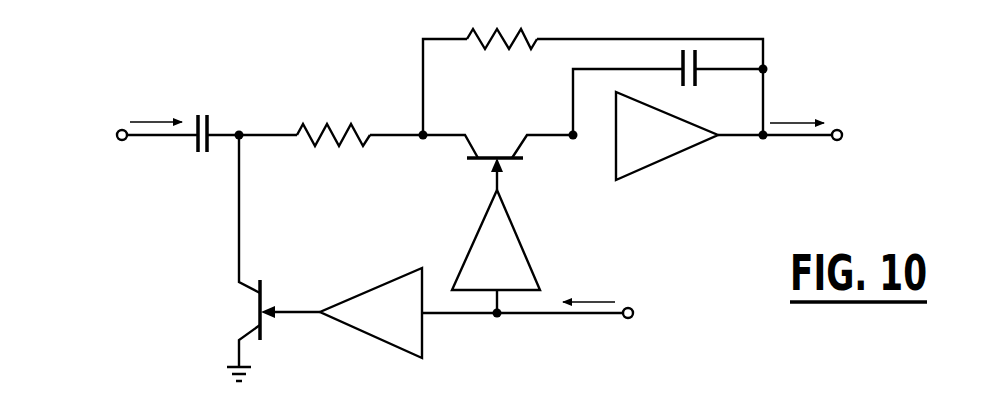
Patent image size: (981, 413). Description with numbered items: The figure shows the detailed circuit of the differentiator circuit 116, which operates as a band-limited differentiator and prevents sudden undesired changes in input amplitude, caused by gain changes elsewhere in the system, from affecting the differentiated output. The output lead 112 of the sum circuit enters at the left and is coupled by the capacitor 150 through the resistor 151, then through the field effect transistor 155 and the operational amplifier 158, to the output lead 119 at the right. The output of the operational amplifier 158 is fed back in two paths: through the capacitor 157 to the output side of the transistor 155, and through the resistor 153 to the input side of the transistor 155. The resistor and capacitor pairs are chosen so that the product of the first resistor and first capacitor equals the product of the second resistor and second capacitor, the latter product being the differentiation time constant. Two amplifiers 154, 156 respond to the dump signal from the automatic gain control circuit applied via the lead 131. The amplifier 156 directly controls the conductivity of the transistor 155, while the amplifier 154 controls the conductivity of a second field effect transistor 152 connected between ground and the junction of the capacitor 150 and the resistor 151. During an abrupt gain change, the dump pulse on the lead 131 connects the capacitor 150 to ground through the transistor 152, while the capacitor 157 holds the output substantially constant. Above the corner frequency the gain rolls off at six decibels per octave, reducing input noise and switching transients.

The output lead 112 is at (121, 141).
The differentiator circuit 116 is at (196, 252).
The output lead 119 is at (835, 141).
The lead 131 is at (632, 309).
The capacitor 150 is at (208, 114).
The resistor 151 is at (327, 128).
The second field effect transistor 152 is at (261, 281).
The resistor 153 is at (470, 36).
The amplifier 154 is at (383, 282).
The field effect transistor 155 is at (524, 160).
The amplifier 156 is at (524, 246).
The capacitor 157 is at (697, 84).
The operational amplifier 158 is at (678, 158).